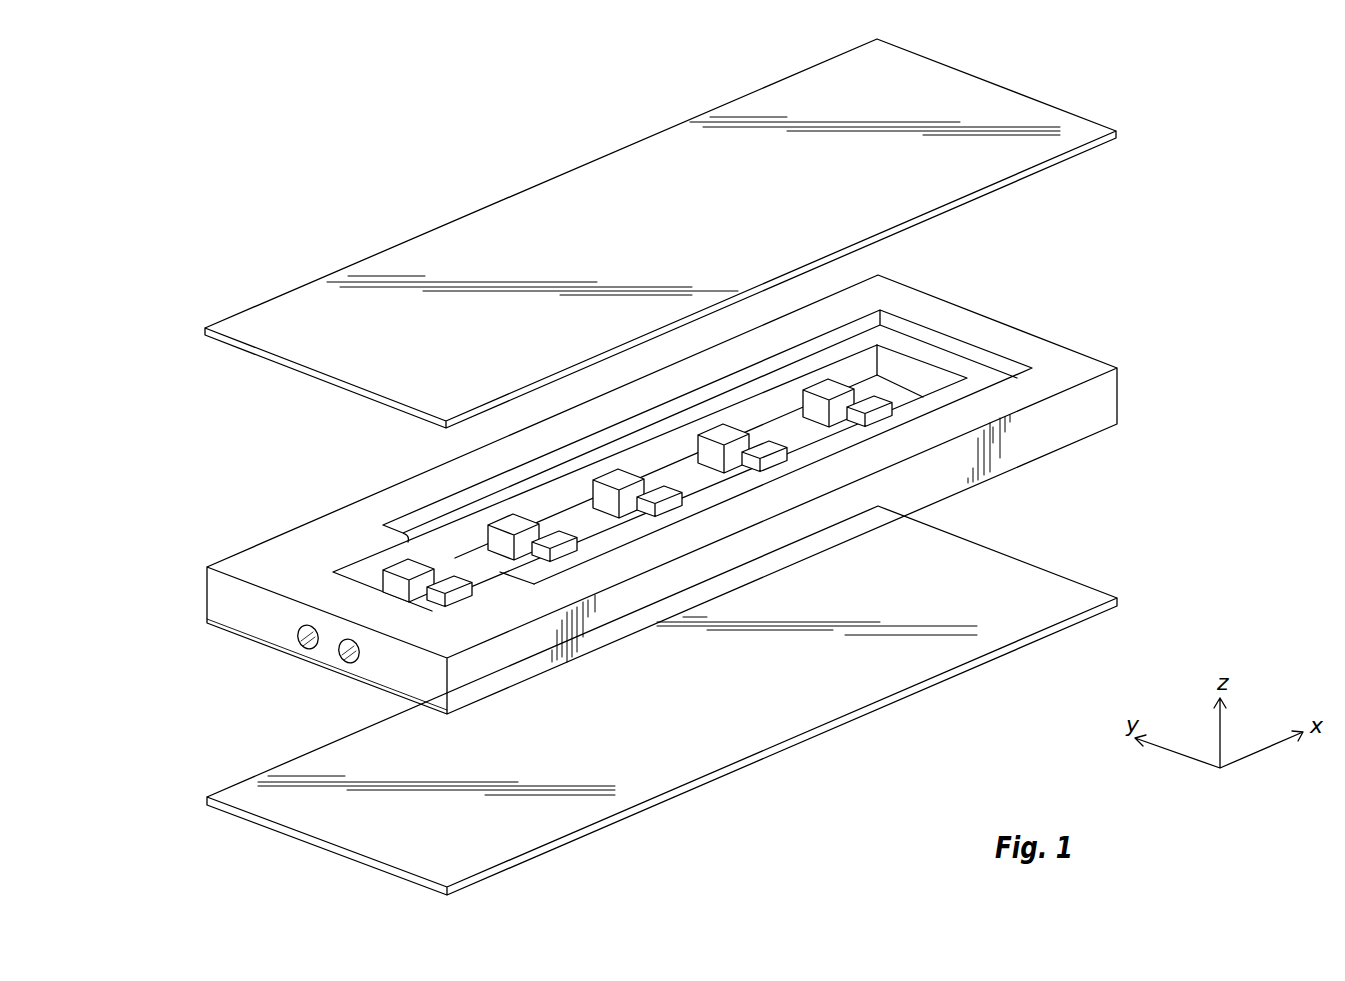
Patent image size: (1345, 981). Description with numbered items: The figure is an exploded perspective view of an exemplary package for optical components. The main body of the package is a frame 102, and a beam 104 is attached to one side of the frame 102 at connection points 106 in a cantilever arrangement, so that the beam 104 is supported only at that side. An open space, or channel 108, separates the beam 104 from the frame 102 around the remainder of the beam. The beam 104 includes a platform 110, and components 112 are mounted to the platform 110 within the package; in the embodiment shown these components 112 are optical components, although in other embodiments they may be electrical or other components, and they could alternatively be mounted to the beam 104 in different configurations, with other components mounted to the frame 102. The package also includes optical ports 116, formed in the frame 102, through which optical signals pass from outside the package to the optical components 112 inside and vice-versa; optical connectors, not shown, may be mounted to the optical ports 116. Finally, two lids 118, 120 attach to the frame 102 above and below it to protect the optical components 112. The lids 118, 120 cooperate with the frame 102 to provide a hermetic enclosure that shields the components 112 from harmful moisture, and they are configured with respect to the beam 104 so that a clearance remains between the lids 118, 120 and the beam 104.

The frame 102 is at (1078, 358).
The beam 104 is at (912, 368).
The connection points 106 is at (393, 528).
The channel 108 is at (1000, 360).
The platform 110 is at (805, 435).
The components 112 is at (617, 480).
The optical ports 116 is at (340, 656).
The lid 118 is at (560, 200).
The lid 120 is at (768, 704).